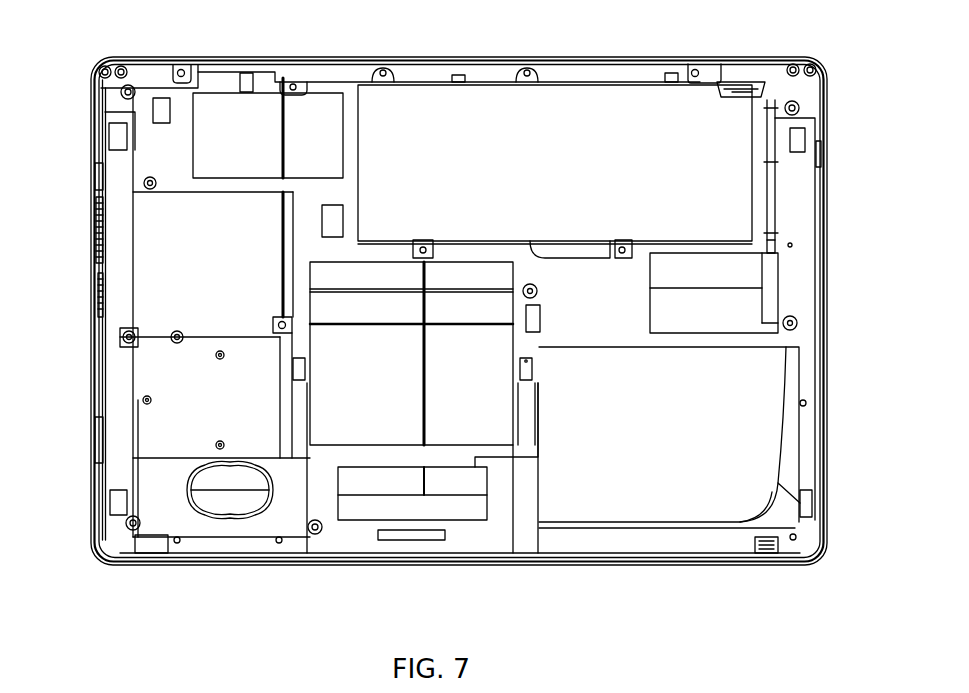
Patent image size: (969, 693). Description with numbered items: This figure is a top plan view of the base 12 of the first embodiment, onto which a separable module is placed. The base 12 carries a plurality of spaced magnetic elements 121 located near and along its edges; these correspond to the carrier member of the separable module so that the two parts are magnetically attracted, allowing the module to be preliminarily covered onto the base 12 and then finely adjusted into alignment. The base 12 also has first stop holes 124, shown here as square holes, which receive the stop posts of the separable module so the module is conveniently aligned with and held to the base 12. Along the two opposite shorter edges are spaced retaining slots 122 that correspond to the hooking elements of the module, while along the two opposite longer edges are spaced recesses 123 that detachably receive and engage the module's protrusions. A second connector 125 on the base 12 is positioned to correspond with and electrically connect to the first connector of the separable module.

The base 12 is at (841, 81).
The magnetic elements 121 is at (112, 134).
The retaining slots 122 is at (819, 156).
The recesses 123 is at (669, 75).
The first stop holes 124 is at (534, 368).
The second connector 125 is at (408, 541).